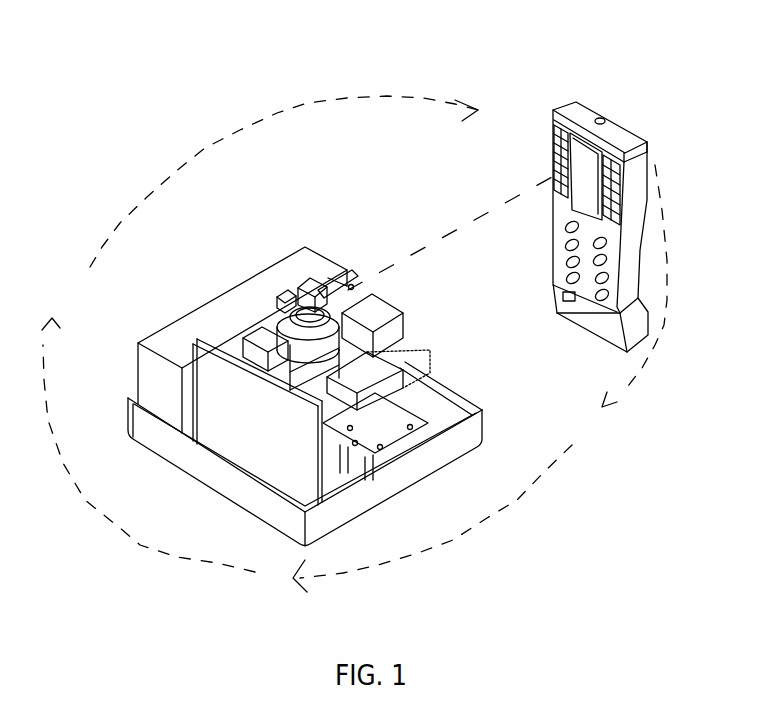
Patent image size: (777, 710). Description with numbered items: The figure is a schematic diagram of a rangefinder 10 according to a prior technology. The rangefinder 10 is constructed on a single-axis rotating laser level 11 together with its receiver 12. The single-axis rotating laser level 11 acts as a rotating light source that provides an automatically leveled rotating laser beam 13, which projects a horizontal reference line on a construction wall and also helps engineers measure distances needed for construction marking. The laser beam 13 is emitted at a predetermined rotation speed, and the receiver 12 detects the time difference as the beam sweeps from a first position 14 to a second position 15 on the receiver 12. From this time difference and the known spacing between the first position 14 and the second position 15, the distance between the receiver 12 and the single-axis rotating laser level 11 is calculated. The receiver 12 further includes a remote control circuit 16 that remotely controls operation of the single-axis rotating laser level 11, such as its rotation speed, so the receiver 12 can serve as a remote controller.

The rangefinder 10 is at (549, 633).
The single-axis rotating laser level 11 is at (207, 318).
The receiver 12 is at (573, 110).
The rotating laser beam 13 is at (513, 198).
The first position 14 is at (553, 160).
The second position 15 is at (620, 173).
The remote control circuit 16 is at (602, 295).